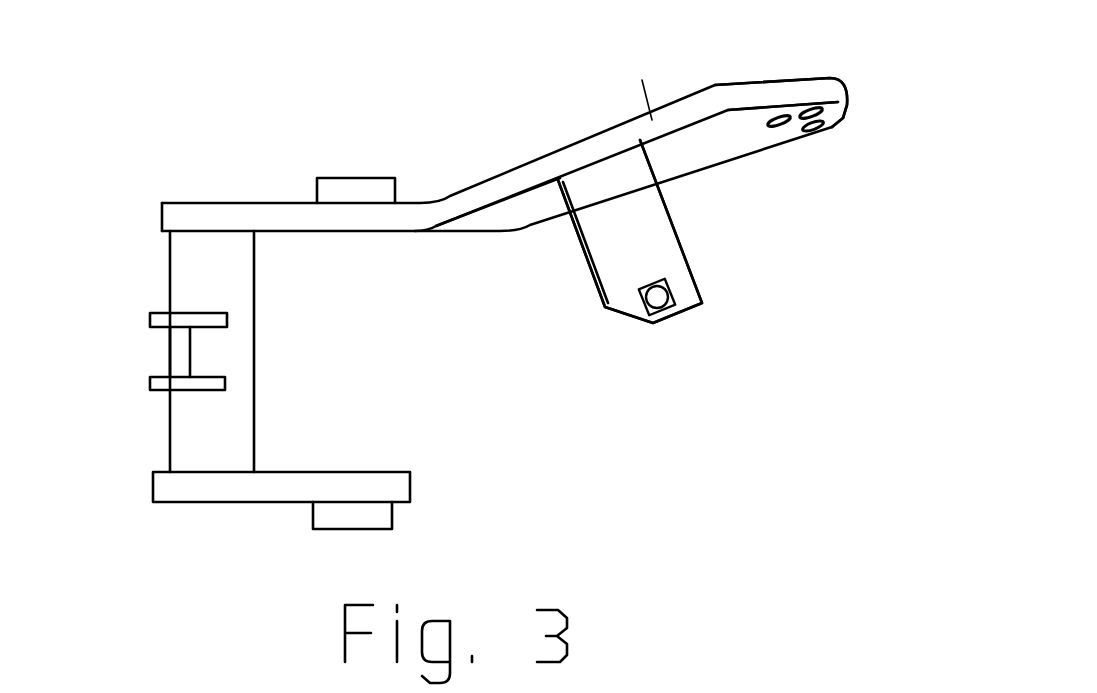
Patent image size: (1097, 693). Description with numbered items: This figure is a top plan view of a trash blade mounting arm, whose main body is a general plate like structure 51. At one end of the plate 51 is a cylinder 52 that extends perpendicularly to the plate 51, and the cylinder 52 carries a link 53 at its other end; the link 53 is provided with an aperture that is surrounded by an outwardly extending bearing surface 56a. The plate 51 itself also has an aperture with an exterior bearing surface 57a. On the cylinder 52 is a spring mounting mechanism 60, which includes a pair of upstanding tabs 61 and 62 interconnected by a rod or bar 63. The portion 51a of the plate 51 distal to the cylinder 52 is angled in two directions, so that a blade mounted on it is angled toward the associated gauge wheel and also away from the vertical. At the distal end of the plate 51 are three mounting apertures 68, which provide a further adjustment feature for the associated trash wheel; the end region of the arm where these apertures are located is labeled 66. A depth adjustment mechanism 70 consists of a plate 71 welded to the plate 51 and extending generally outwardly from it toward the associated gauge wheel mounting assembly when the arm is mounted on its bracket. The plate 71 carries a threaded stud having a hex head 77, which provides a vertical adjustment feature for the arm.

The plate like structure 51 is at (473, 180).
The portion of the plate distal to the cylinder 51a is at (650, 117).
The cylinder 52 is at (240, 305).
The link 53 is at (255, 490).
The outwardly extending bearing surface 56a is at (330, 516).
The exterior bearing surface 57a is at (363, 192).
The spring mounting mechanism 60 is at (148, 347).
The upstanding tab 61 is at (213, 320).
The upstanding tab 62 is at (160, 385).
The rod or bar 63 is at (178, 362).
The end portion of arm 66 is at (785, 92).
The mounting apertures 68 is at (810, 130).
The depth adjustment mechanism 70 is at (592, 284).
The plate 71 is at (663, 243).
The hex head 77 is at (658, 296).